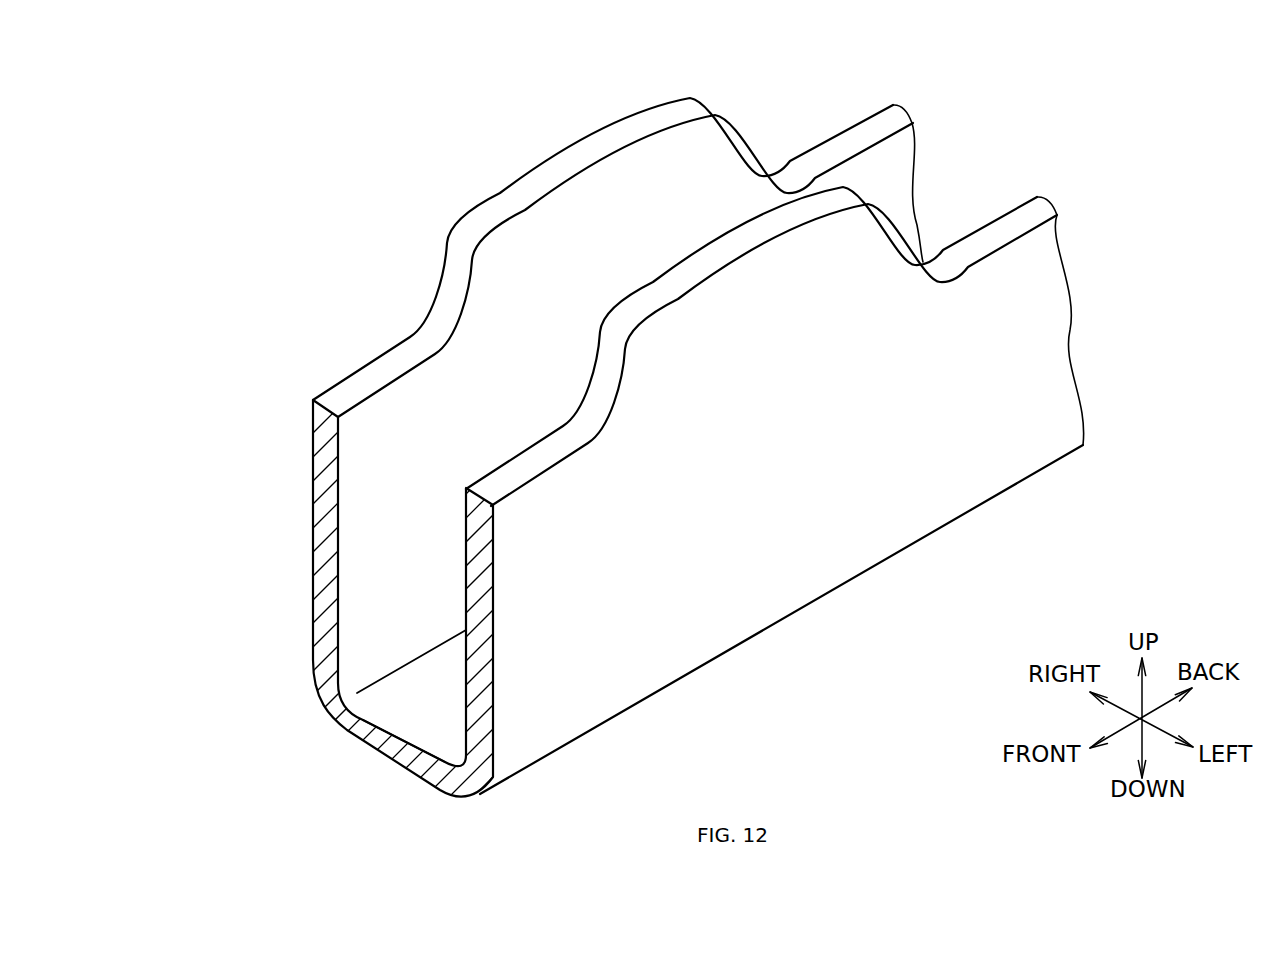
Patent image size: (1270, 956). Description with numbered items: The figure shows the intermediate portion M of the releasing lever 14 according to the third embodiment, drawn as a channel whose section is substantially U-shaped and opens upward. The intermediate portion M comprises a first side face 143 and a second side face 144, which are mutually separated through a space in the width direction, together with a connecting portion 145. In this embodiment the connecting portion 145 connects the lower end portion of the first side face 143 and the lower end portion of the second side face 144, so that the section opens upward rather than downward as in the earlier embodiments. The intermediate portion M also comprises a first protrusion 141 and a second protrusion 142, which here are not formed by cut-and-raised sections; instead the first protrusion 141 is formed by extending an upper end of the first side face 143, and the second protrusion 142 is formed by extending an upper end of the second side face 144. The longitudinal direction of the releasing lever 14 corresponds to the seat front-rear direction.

The intermediate portion M is at (395, 228).
The releasing lever 14 is at (365, 368).
The first protrusion 141 is at (612, 123).
The second protrusion 142 is at (750, 216).
The first side face 143 is at (380, 480).
The second side face 144 is at (822, 545).
The connecting portion 145 is at (417, 718).